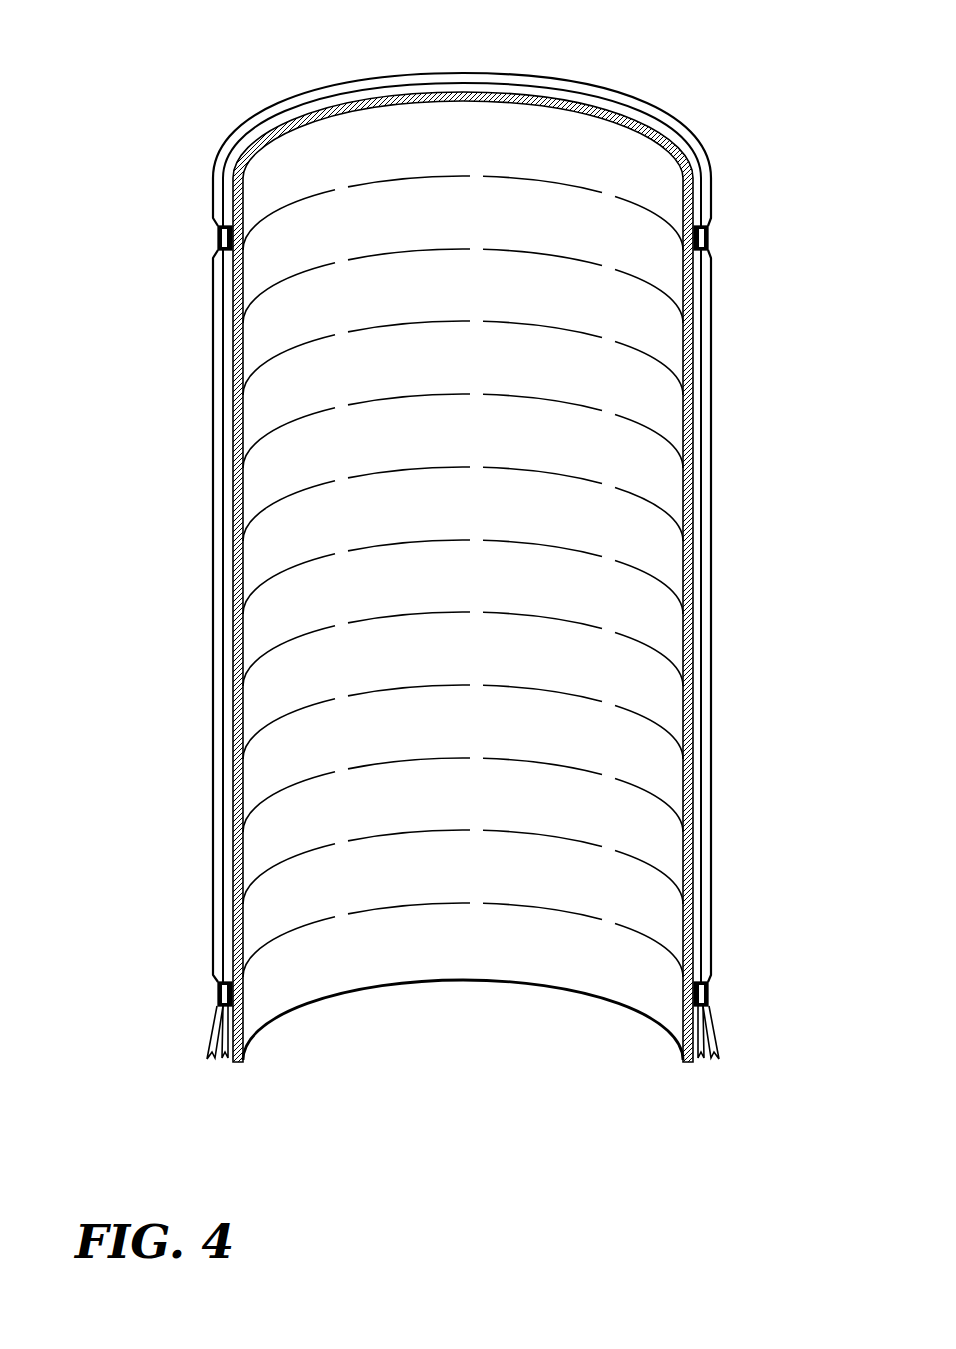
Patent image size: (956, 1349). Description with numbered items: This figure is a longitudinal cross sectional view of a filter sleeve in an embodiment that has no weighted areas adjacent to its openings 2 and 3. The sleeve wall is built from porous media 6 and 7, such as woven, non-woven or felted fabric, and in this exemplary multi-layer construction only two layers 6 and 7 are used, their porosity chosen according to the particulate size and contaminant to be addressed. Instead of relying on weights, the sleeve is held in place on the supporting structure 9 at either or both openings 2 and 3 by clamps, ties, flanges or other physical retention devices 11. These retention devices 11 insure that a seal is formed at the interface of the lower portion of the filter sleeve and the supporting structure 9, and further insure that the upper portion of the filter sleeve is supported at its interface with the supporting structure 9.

The opening 2 is at (474, 222).
The opening 3 is at (474, 856).
The porous media layer 6 is at (711, 353).
The porous media layer 7 is at (711, 582).
The supporting structure 9 is at (240, 630).
The physical retention device 11 is at (218, 240).